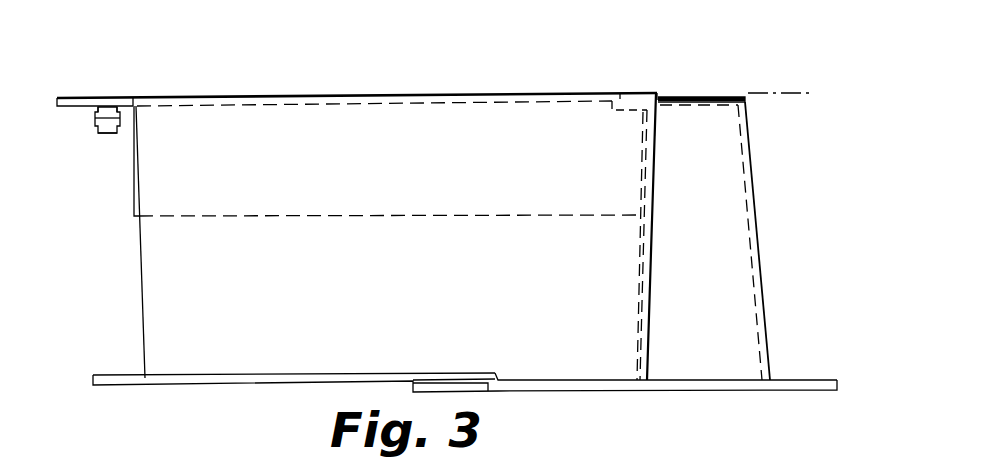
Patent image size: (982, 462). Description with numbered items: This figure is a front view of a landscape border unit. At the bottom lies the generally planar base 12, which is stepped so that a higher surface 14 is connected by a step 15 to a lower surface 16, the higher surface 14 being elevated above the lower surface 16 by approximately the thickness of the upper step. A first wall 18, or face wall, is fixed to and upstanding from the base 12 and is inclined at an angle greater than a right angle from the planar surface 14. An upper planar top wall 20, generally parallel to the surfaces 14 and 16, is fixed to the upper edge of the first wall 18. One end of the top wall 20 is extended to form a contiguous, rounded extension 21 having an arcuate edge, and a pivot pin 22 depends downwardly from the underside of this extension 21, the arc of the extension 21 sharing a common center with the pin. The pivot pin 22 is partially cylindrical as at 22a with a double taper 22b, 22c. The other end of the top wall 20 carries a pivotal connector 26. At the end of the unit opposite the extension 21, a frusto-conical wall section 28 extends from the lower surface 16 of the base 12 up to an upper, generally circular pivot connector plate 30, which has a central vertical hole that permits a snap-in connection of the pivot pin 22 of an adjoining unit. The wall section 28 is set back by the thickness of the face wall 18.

The base 12 is at (93, 380).
The higher surface 14 is at (267, 373).
The step 15 is at (497, 378).
The lower surface 16 is at (597, 380).
The first wall 18 is at (392, 277).
The top wall 20 is at (352, 95).
The rounded extension 21 is at (70, 97).
The pivot pin 22 is at (97, 133).
The partially cylindrical portion 22a is at (100, 108).
The double taper 22b is at (118, 110).
The double taper 22c is at (118, 130).
The pivotal connector 26 is at (715, 93).
The frusto-conical wall section 28 is at (716, 252).
The pivot connector plate 30 is at (730, 101).